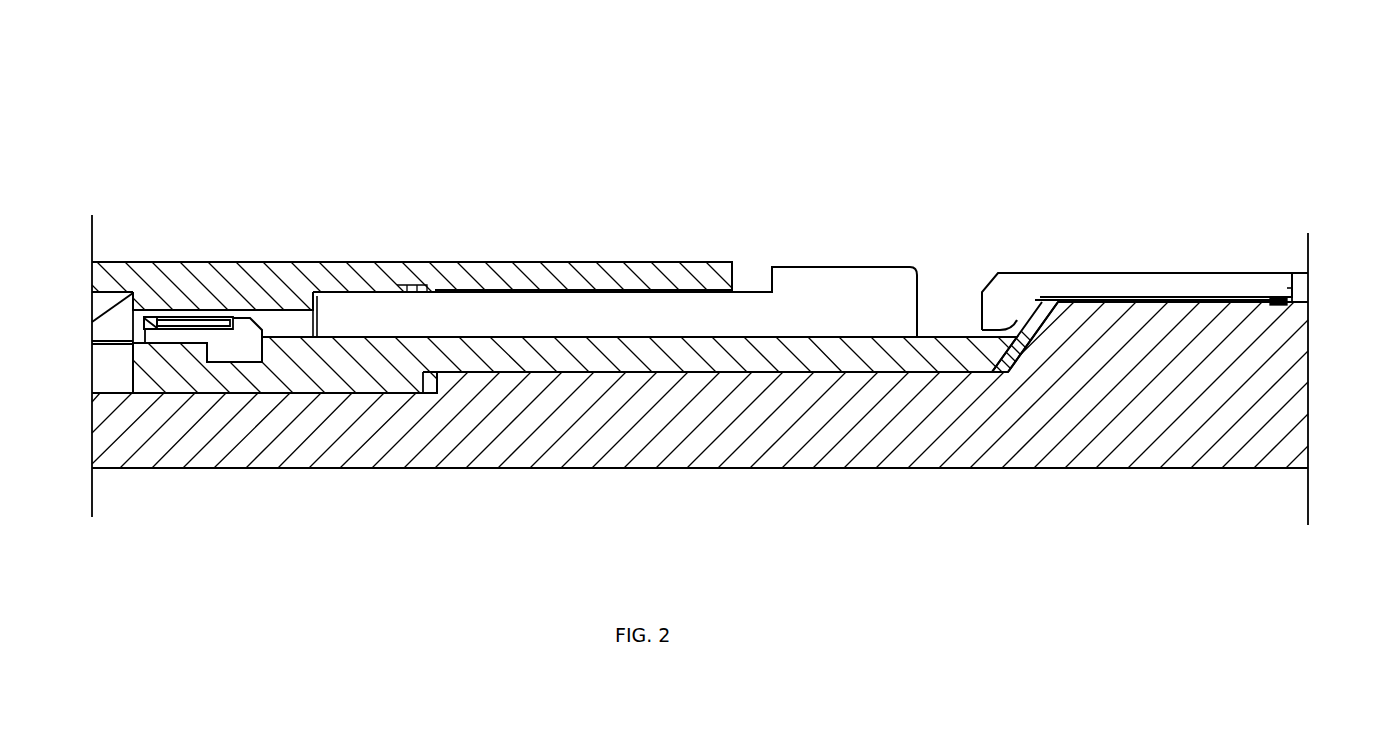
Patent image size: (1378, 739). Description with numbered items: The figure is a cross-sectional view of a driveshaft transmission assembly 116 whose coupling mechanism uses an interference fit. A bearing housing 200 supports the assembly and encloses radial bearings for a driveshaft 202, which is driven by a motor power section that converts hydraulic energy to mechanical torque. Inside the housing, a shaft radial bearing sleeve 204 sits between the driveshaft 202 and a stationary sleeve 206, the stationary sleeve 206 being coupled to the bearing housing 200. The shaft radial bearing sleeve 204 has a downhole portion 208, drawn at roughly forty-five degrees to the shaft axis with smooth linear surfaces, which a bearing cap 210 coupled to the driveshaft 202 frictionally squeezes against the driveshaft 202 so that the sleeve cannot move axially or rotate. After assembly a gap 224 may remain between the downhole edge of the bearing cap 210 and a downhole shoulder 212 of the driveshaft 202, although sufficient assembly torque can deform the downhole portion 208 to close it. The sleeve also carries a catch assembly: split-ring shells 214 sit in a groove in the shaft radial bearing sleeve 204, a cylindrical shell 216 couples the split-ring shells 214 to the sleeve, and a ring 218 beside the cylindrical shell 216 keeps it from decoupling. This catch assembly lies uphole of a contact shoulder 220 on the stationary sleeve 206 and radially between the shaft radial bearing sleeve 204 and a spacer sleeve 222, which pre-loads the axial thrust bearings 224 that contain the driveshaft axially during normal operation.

The driveshaft transmission assembly 116 is at (109, 105).
The bearing housing 200 is at (288, 276).
The driveshaft 202 is at (873, 458).
The shaft radial bearing sleeve 204 is at (502, 357).
The stationary sleeve 206 is at (843, 287).
The downhole portion 208 is at (1023, 328).
The bearing cap 210 is at (1137, 285).
The downhole shoulder 212 is at (1288, 288).
The split-ring shells 214 is at (252, 352).
The cylindrical shell 216 is at (222, 325).
The ring 218 is at (144, 323).
The contact shoulder 220 is at (320, 288).
The spacer sleeve 222 is at (199, 300).
The gap / axial thrust bearings 224 is at (108, 313).